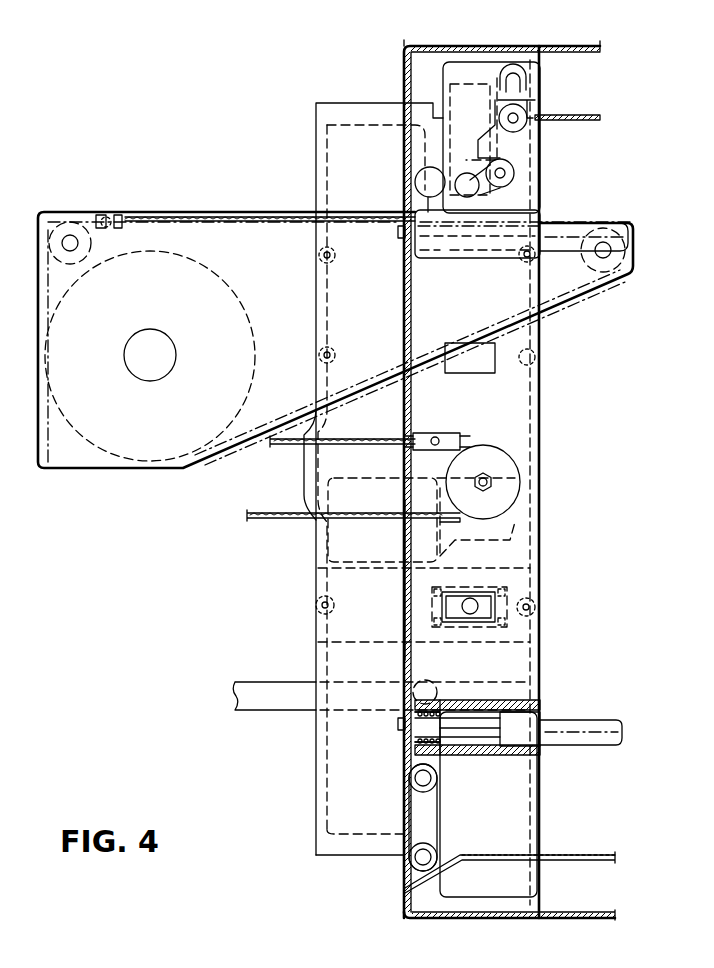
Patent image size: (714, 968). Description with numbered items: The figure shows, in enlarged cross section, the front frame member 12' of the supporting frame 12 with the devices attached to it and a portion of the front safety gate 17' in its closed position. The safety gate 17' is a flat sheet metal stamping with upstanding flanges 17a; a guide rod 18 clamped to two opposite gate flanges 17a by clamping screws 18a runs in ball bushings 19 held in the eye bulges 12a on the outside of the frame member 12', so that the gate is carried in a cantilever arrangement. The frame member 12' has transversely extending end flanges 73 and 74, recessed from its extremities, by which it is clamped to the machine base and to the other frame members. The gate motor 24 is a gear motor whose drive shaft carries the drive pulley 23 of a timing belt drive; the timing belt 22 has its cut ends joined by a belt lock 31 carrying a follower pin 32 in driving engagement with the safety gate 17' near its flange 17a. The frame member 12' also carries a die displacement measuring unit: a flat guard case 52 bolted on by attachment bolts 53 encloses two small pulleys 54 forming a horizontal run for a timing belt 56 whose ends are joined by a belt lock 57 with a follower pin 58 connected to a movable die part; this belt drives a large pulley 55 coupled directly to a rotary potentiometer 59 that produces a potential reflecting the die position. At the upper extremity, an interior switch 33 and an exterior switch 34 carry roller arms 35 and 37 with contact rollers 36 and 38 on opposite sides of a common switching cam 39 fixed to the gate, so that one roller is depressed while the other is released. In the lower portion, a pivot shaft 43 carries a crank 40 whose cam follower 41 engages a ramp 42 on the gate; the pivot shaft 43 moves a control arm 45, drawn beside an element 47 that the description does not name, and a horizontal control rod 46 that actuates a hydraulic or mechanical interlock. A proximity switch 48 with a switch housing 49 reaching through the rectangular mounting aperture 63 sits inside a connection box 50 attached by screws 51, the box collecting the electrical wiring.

The supporting frame 12 is at (509, 479).
The front frame member 12' is at (555, 482).
The eye bulge 12a is at (520, 216).
The front safety gate 17' is at (480, 918).
The gate flange 17a is at (404, 582).
The guide rod 18 is at (572, 232).
The clamping screw 18a is at (400, 238).
The ball bushing 19 is at (514, 752).
The timing belt 22 is at (276, 449).
The drive pulley 23 is at (483, 458).
The gate motor 24 is at (332, 540).
The belt lock 31 is at (420, 436).
The follower pin 32 is at (436, 437).
The interior switch 33 is at (467, 72).
The exterior switch 34 is at (538, 88).
The roller arm 35 is at (440, 185).
The contact roller 36 is at (508, 172).
The roller arm 37 is at (513, 78).
The contact roller 38 is at (522, 116).
The switching cam 39 is at (578, 113).
The crank 40 is at (420, 808).
The cam follower 41 is at (412, 864).
The ramp 42 is at (572, 856).
The pivot shaft 43 is at (412, 778).
The control arm 45 is at (440, 705).
The control rod 46 is at (250, 692).
The screw 47 is at (428, 692).
The proximity switch 48 is at (472, 600).
The switch housing 49 is at (488, 612).
The connection box 50 is at (345, 633).
The screw 51 is at (318, 604).
The guard case 52 is at (72, 456).
The attachment bolt 53 is at (318, 256).
The small pulley 54 is at (56, 224).
The large pulley 55 is at (166, 442).
The timing belt 56 is at (188, 216).
The belt lock 57 is at (120, 215).
The follower pin 58 is at (100, 215).
The rotary potentiometer 59 is at (166, 360).
The mounting aperture 63 is at (488, 370).
The end flange 73 is at (330, 855).
The end flange 74 is at (372, 110).